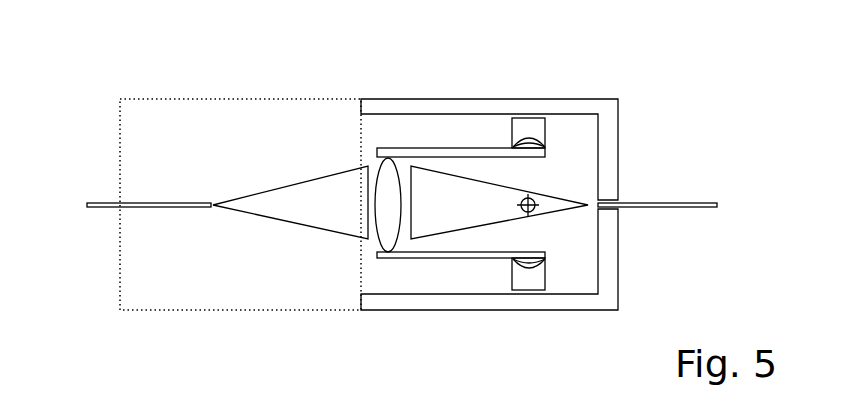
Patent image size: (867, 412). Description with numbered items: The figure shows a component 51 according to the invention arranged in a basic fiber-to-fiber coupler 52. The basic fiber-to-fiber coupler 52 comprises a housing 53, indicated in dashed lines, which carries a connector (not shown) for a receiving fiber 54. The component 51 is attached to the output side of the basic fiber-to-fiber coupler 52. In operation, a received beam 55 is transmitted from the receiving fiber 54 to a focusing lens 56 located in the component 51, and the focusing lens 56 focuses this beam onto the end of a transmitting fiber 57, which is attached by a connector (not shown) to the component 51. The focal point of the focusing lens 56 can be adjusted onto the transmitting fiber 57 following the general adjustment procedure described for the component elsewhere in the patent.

The component 51 is at (513, 80).
The basic fiber-to-fiber coupler 52 is at (223, 200).
The housing 53 is at (159, 99).
The receiving fiber 54 is at (111, 207).
The received beam 55 is at (290, 221).
The focusing lens 56 is at (377, 238).
The transmitting fiber 57 is at (643, 200).